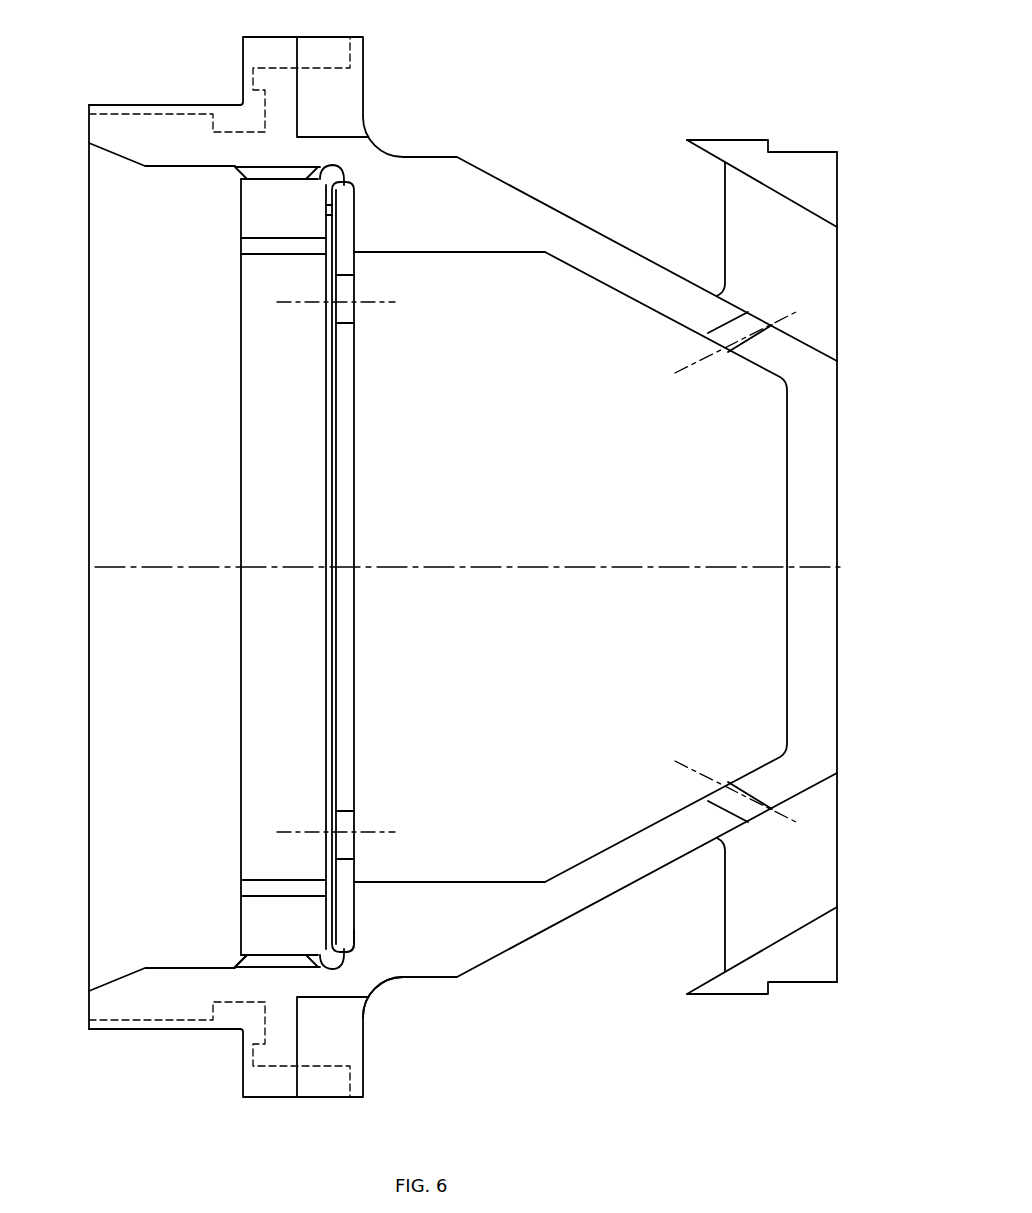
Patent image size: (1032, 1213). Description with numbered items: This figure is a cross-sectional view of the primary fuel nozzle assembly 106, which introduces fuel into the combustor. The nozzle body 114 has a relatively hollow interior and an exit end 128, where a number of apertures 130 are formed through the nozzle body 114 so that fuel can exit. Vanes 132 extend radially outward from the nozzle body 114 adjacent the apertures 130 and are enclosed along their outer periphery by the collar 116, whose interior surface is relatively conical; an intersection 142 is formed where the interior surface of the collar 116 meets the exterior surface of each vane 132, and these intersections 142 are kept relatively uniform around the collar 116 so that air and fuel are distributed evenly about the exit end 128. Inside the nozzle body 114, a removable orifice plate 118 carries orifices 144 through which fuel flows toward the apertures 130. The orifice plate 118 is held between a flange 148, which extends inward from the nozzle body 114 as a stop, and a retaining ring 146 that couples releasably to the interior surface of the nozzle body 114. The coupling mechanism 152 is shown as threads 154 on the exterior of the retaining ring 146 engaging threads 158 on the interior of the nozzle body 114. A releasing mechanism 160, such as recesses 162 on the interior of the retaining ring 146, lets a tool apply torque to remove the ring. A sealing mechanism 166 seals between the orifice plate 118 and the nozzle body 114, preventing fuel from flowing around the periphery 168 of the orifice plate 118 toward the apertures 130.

The primary fuel nozzle assembly 106 is at (105, 75).
The nozzle body 114 is at (530, 218).
The collar 116 is at (745, 152).
The orifice plate 118 is at (341, 233).
The exit end 128 is at (856, 418).
The apertures 130 is at (760, 338).
The vanes 132 is at (808, 245).
The intersection 142 is at (716, 168).
The orifices 144 is at (338, 293).
The retaining ring 146 is at (265, 350).
The flange 148 is at (356, 903).
The coupling mechanism 152 is at (235, 949).
The threads 154 is at (345, 965).
The threads 158 is at (235, 963).
The releasing mechanism 160 is at (186, 510).
The recesses 162 is at (250, 888).
The sealing mechanism 166 is at (360, 922).
The periphery 168 is at (342, 937).